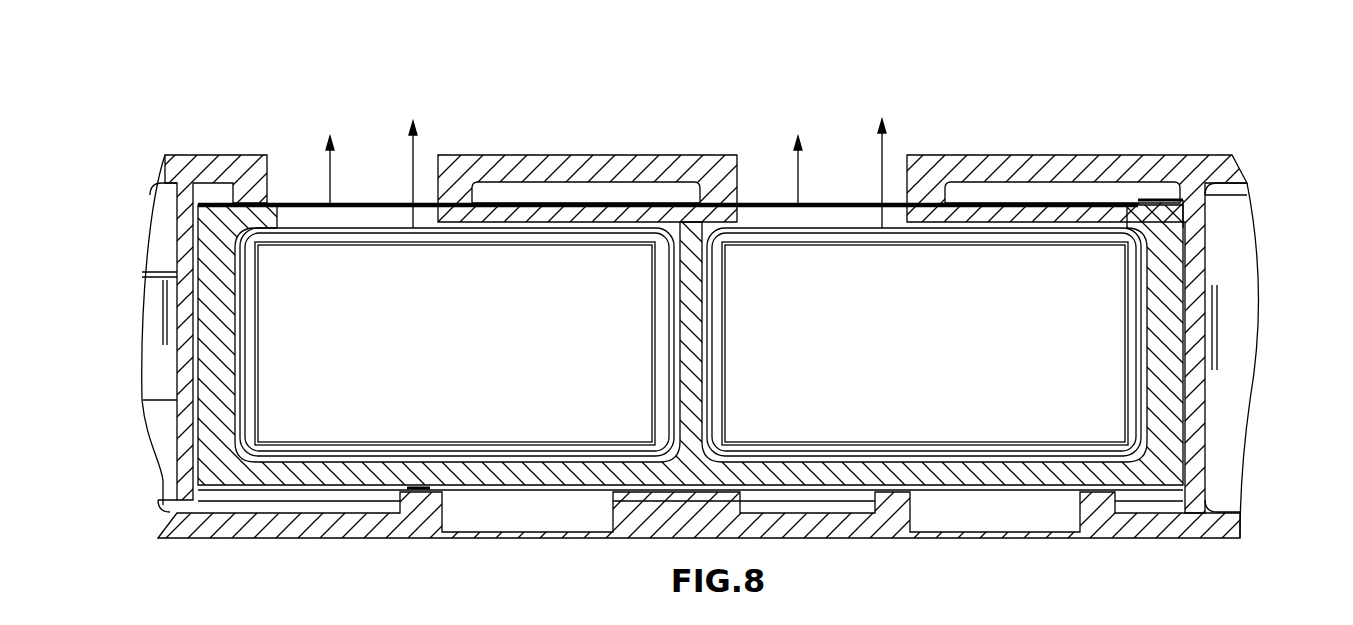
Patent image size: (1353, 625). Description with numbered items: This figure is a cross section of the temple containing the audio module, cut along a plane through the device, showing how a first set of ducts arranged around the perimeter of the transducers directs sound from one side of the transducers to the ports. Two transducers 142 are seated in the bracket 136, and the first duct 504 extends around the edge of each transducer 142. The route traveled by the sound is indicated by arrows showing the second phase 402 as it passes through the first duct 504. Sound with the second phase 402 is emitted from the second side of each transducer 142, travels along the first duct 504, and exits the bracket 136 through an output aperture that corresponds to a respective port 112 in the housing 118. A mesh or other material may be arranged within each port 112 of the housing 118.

The housing 118 is at (1095, 168).
The bracket 136 is at (1162, 453).
The first duct 504 is at (288, 160).
The port 112 is at (352, 148).
The second phase 402 is at (413, 152).
The transducer 142 is at (535, 305).